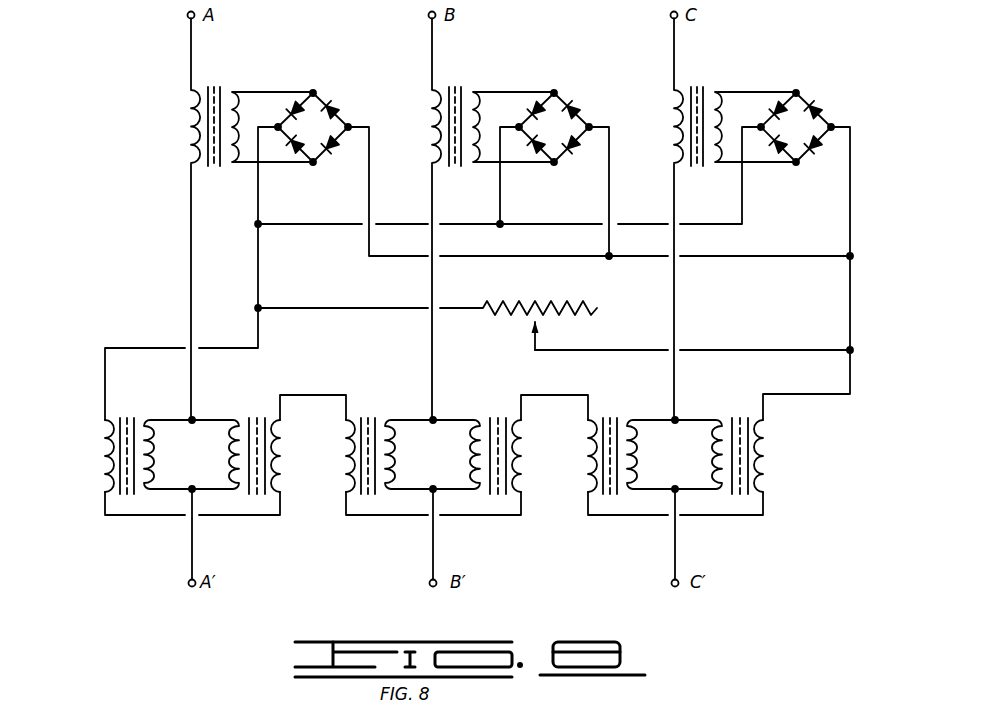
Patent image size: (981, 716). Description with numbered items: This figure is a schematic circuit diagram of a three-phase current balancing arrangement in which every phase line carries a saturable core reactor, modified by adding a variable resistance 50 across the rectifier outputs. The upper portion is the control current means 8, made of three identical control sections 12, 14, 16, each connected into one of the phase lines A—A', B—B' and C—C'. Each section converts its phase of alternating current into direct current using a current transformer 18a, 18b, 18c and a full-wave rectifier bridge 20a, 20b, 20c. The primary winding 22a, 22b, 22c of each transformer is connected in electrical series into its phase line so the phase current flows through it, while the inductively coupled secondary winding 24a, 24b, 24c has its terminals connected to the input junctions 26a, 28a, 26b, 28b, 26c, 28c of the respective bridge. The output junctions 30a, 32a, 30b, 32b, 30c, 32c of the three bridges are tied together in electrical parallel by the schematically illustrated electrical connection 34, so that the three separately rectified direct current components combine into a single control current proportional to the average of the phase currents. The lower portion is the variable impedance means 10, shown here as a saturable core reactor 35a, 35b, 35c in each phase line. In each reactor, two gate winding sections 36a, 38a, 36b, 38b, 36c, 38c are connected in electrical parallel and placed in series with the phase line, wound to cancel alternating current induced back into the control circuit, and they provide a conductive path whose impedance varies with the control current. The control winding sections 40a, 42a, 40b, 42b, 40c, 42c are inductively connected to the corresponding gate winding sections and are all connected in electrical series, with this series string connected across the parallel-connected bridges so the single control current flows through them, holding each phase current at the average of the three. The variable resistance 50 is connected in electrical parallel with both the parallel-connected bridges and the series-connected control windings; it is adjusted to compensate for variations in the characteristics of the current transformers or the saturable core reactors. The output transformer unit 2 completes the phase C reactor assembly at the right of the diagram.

The saturable reactor output transformer unit 2 is at (692, 482).
The control current means 8 is at (252, 216).
The variable impedance means 10 is at (174, 482).
The control section 12 is at (220, 216).
The control section 14 is at (469, 216).
The control section 16 is at (712, 216).
The current transformer 18a is at (221, 84).
The current transformer 18b is at (464, 102).
The current transformer 18c is at (706, 102).
The full-wave rectifier bridge 20a is at (310, 127).
The full-wave rectifier bridge 20b is at (548, 130).
The full-wave rectifier bridge 20c is at (788, 130).
The primary winding 22a is at (190, 108).
The primary winding 22b is at (413, 216).
The primary winding 22c is at (655, 216).
The secondary winding 24a is at (272, 127).
The secondary winding 24b is at (513, 127).
The secondary winding 24c is at (755, 127).
The input junction 26a is at (317, 88).
The input junction 26b is at (580, 76).
The input junction 26c is at (821, 76).
The input junction 28a is at (311, 166).
The input junction 28b is at (564, 181).
The input junction 28c is at (812, 181).
The output junction 30a is at (278, 128).
The output junction 30b is at (484, 156).
The output junction 30c is at (727, 158).
The output junction 32a is at (355, 126).
The output junction 32b is at (618, 118).
The output junction 32c is at (857, 118).
The electrical connection 34 is at (252, 226).
The saturable core reactor 35a is at (205, 482).
The saturable core reactor 35b is at (445, 482).
The saturable core reactor 35c is at (688, 482).
The gate winding section 36a is at (156, 439).
The gate winding section 36b is at (416, 454).
The gate winding section 36c is at (657, 454).
The gate winding section 38a is at (229, 471).
The gate winding section 38b is at (445, 454).
The gate winding section 38c is at (687, 454).
The control winding section 40a is at (103, 432).
The control winding section 40b is at (323, 461).
The control winding section 40c is at (566, 461).
The control winding section 42a is at (280, 441).
The control winding section 42b is at (539, 450).
The control winding section 42c is at (789, 450).
The variable resistance 50 is at (546, 304).